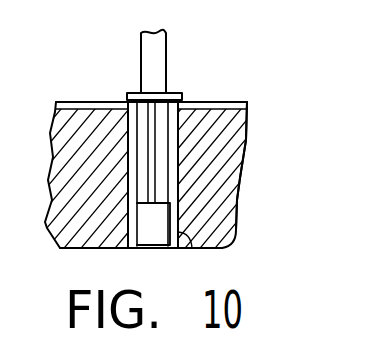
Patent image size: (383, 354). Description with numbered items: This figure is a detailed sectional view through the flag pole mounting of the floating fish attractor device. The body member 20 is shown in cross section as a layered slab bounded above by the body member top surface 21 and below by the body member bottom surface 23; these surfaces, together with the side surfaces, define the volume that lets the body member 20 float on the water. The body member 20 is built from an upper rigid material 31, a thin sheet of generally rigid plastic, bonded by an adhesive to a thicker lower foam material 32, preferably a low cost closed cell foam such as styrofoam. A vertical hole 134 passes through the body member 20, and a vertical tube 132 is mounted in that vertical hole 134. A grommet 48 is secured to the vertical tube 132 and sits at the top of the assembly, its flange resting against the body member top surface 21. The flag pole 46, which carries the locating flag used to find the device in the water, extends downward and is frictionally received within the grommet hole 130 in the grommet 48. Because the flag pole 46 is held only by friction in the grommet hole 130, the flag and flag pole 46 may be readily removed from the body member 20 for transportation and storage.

The body member 20 is at (233, 157).
The body member top surface 21 is at (216, 104).
The body member bottom surface 23 is at (212, 248).
The upper rigid material 31 is at (252, 107).
The lower foam material 32 is at (232, 190).
The flag pole 46 is at (158, 58).
The grommet 48 is at (178, 93).
The grommet hole 130 is at (140, 81).
The vertical tube 132 is at (135, 249).
The vertical hole 134 is at (193, 248).